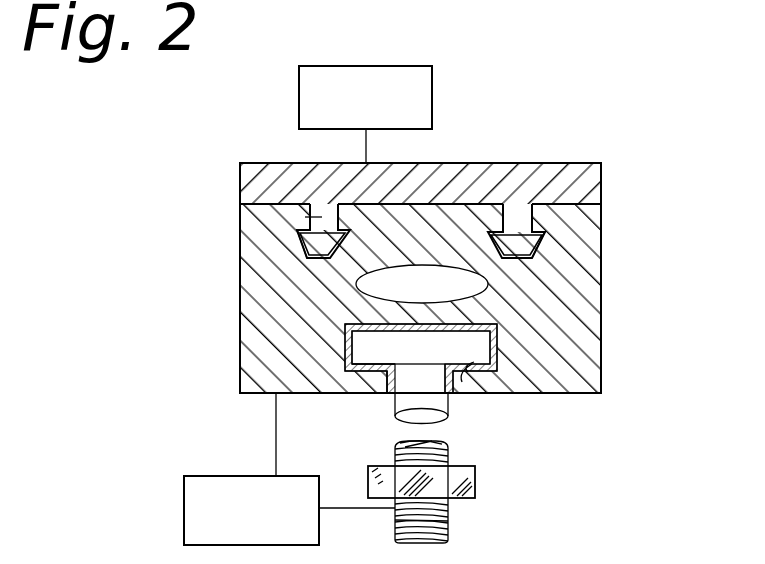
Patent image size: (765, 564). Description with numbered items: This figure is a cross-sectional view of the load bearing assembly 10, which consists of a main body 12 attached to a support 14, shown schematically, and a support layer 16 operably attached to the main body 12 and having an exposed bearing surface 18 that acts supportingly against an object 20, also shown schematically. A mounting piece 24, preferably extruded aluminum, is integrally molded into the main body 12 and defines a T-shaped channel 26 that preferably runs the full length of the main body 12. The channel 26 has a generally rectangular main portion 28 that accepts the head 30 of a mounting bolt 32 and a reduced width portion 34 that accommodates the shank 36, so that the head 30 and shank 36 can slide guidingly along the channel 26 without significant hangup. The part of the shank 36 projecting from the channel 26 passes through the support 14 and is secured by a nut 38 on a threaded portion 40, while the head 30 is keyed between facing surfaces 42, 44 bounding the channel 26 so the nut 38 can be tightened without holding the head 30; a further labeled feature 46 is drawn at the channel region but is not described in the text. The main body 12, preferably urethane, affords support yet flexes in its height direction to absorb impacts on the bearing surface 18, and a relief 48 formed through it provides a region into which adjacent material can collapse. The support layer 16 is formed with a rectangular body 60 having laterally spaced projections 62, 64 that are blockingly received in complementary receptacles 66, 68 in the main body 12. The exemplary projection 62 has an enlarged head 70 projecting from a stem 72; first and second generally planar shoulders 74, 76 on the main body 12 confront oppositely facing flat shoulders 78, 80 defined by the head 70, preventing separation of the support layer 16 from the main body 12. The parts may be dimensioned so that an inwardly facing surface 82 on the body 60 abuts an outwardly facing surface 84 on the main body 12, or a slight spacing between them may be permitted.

The load bearing assembly 10 is at (656, 249).
The main body 12 is at (262, 343).
The support 14 is at (241, 532).
The support layer 16 is at (603, 165).
The bearing surface 18 is at (497, 208).
The object 20 is at (356, 123).
The mounting piece 24 is at (473, 370).
The T-shaped channel 26 is at (343, 371).
The main portion 28 is at (480, 373).
The head 30 is at (393, 385).
The mounting bolt 32 is at (448, 528).
The reduced width portion 34 is at (445, 399).
The shank 36 is at (485, 375).
The nut 38 is at (473, 484).
The threaded portion 40 is at (395, 528).
The facing surface 42 is at (375, 366).
The facing surface 44 is at (477, 370).
The cavity shoulder 46 is at (350, 366).
The relief 48 is at (262, 312).
The rectangular body 60 is at (567, 172).
The projection 62 is at (318, 217).
The projection 64 is at (546, 232).
The receptacle 66 is at (340, 241).
The receptacle 68 is at (530, 250).
The enlarged head 70 is at (356, 284).
The stem 72 is at (302, 232).
The first shoulder 74 is at (340, 247).
The second shoulder 76 is at (445, 210).
The flat shoulder 78 is at (300, 222).
The flat shoulder 80 is at (336, 258).
The inwardly facing surface 82 is at (470, 210).
The outwardly facing surface 84 is at (557, 200).